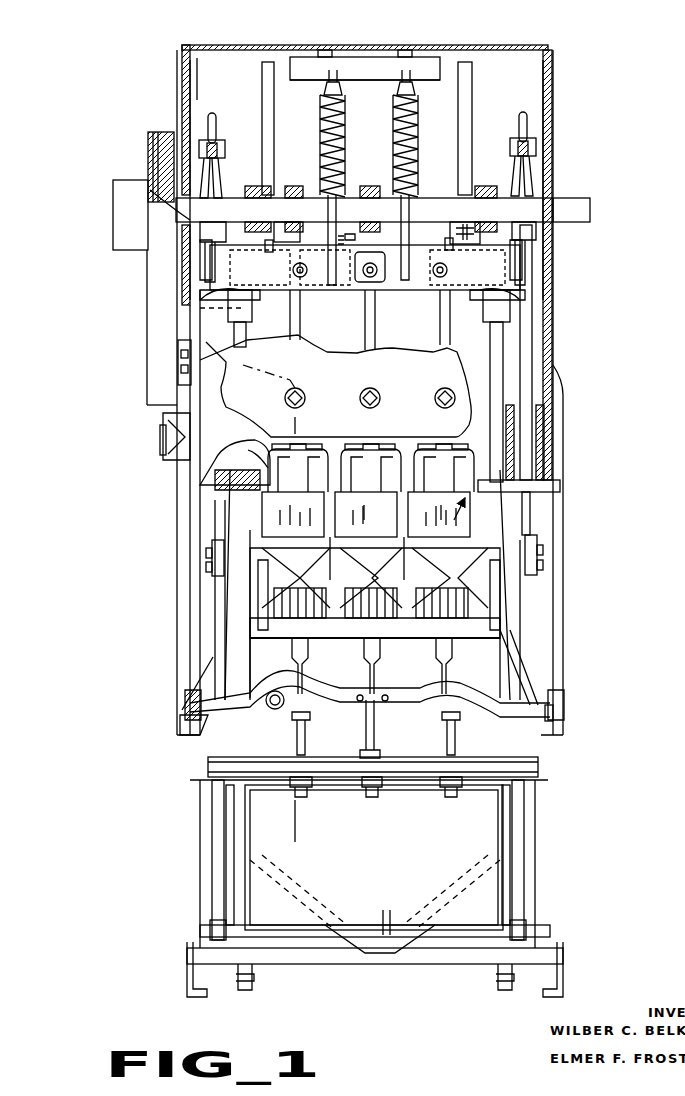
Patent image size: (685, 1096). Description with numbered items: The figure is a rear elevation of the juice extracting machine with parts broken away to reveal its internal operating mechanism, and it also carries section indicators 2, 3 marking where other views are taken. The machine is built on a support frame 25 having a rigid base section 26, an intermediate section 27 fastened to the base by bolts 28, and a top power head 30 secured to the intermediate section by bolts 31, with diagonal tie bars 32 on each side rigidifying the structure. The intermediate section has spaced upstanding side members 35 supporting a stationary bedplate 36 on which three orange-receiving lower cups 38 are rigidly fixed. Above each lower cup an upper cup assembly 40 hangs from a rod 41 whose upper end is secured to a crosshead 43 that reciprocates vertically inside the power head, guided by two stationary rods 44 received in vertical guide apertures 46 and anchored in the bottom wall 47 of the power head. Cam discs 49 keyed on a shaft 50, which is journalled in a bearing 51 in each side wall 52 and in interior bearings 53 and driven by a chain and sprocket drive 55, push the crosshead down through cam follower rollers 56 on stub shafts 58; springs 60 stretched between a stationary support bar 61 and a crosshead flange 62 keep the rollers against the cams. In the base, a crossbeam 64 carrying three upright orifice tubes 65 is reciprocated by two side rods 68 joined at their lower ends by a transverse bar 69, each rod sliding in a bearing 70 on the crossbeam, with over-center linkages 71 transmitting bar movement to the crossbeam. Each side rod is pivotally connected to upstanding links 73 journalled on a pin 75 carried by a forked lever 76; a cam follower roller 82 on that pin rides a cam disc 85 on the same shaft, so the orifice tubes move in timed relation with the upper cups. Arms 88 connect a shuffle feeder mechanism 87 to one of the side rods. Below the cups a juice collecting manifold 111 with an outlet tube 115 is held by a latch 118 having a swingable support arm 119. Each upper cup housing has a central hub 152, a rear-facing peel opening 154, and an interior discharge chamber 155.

The housing wall 2 is at (180, 78).
The section line 3 is at (250, 424).
The support frame 25 is at (158, 441).
The base section 26 is at (190, 792).
The intermediate section 27 is at (525, 660).
The bolts 28 is at (190, 722).
The top power head 30 is at (535, 326).
The bolts 31 is at (230, 505).
The tie bars 32 is at (180, 662).
The side members 35 is at (505, 592).
The bedplate 36 is at (420, 680).
The lower cups 38 is at (375, 608).
The upper cup assembly 40 is at (430, 462).
The rod 41 is at (434, 343).
The crosshead 43 is at (365, 267).
The upstanding rods 44 is at (245, 345).
The vertical guide apertures 46 is at (215, 302).
The bottom wall 47 is at (500, 496).
The cam discs 49 is at (268, 85).
The shaft 50 is at (590, 210).
The bearing 51 is at (208, 226).
The side wall 52 is at (188, 99).
The bearings 53 is at (300, 196).
The chain and sprocket drive 55 is at (168, 160).
The cam follower rollers 56 is at (462, 227).
The stub shafts 58 is at (408, 302).
The springs 60 is at (393, 124).
The stationary support bar 61 is at (380, 70).
The flange 62 is at (408, 294).
The crossbeam 64 is at (419, 784).
The orifice tubes 65 is at (476, 730).
The rods 68 is at (215, 888).
The transverse bar 69 is at (315, 940).
The bearing 70 is at (215, 766).
The over-center linkages 71 is at (245, 860).
The upstanding links 73 is at (218, 249).
The pin 75 is at (226, 161).
The lever 76 is at (208, 118).
The cam follower roller 82 is at (199, 145).
The cam disc 85 is at (212, 180).
The shuffle feeder mechanism 87 is at (366, 573).
The arms 88 is at (215, 558).
The juice collecting manifold 111 is at (500, 708).
The outlet tube 115 is at (290, 700).
The latch 118 is at (410, 833).
The swingable support arm 119 is at (380, 737).
The central hub 152 is at (368, 523).
The opening 154 is at (393, 510).
The discharge chamber 155 is at (448, 514).